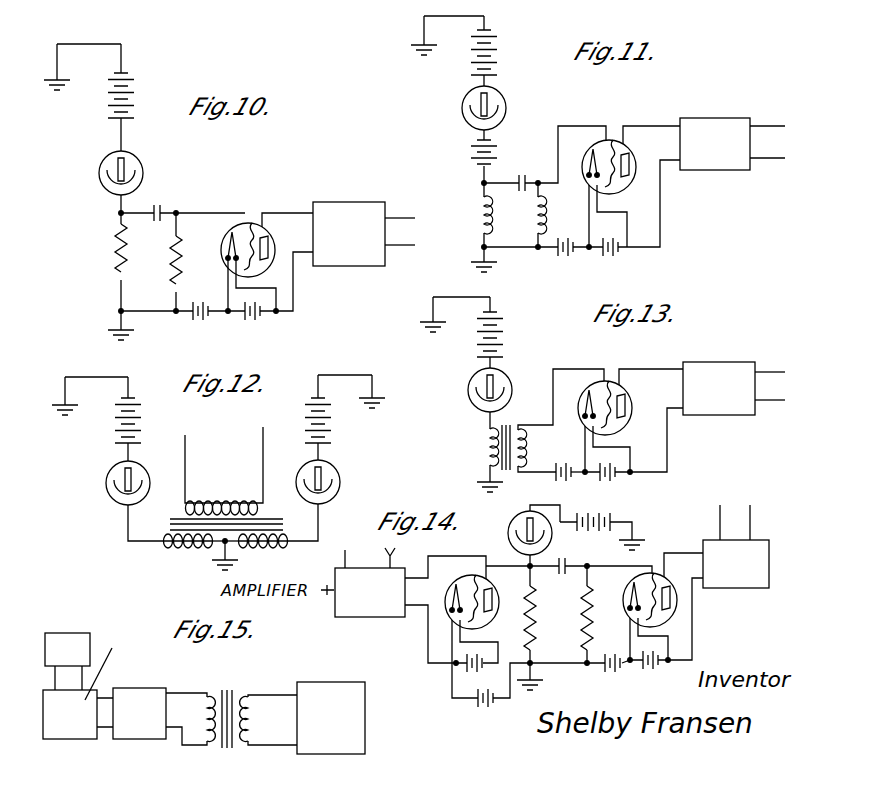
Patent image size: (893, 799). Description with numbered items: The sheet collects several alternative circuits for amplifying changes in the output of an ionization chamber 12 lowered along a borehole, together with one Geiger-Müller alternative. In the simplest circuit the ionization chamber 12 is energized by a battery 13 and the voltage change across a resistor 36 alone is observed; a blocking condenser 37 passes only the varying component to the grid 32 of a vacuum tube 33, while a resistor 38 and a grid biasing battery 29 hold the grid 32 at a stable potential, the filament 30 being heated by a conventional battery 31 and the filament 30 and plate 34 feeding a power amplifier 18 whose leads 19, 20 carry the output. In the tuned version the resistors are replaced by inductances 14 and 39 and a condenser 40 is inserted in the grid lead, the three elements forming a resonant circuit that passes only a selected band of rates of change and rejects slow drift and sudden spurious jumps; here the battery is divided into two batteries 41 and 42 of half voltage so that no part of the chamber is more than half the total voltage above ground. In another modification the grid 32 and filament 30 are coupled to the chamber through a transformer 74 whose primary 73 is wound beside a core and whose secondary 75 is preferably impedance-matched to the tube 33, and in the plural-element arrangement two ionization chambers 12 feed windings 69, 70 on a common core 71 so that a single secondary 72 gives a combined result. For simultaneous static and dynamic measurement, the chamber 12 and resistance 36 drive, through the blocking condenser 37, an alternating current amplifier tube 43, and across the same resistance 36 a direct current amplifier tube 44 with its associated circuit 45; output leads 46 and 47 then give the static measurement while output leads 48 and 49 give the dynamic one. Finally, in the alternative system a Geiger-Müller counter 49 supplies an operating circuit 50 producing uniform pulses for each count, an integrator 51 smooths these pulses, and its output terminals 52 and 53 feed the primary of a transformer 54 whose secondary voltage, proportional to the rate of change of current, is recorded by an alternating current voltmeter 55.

In FIG. 10, the ionization chamber 12 is at (98, 172).
In FIG. 11, the ionization chamber 12 is at (508, 100).
In FIG. 13, the ionization chamber 12 is at (469, 384).
In FIG. 12, the ionization chamber 12 is at (106, 483).
In FIG. 14, the ionization chamber 12 is at (509, 535).
In FIG. 10, the battery 13 is at (108, 90).
In FIG. 13, the battery 13 is at (503, 330).
In FIG. 12, the battery 13 is at (105, 420).
In FIG. 14, the battery 13 is at (613, 519).
In FIG. 11, the inductance 14 is at (478, 212).
In FIG. 10, the power amplifier 18 is at (347, 207).
In FIG. 11, the power amplifier 18 is at (710, 158).
In FIG. 13, the power amplifier 18 is at (709, 412).
In FIG. 14, the power amplifier 18 is at (765, 568).
In FIG. 10, the output lead 19 is at (398, 248).
In FIG. 11, the output lead 19 is at (768, 162).
In FIG. 13, the output lead 19 is at (772, 406).
In FIG. 10, the output lead 20 is at (403, 216).
In FIG. 11, the output lead 20 is at (767, 118).
In FIG. 13, the output lead 20 is at (772, 364).
In FIG. 10, the grid biasing battery 29 is at (212, 318).
In FIG. 11, the grid biasing battery 29 is at (566, 255).
In FIG. 13, the grid biasing battery 29 is at (548, 480).
In FIG. 10, the filament 30 is at (229, 258).
In FIG. 11, the filament 30 is at (590, 160).
In FIG. 13, the filament 30 is at (588, 400).
In FIG. 10, the battery 31 is at (249, 317).
In FIG. 11, the battery 31 is at (607, 256).
In FIG. 13, the battery 31 is at (614, 484).
In FIG. 10, the grid 32 is at (238, 236).
In FIG. 11, the grid 32 is at (614, 140).
In FIG. 13, the grid 32 is at (610, 381).
In FIG. 10, the vacuum tube 33 is at (250, 222).
In FIG. 11, the vacuum tube 33 is at (626, 183).
In FIG. 13, the vacuum tube 33 is at (630, 398).
In FIG. 10, the plate 34 is at (266, 248).
In FIG. 11, the plate 34 is at (629, 162).
In FIG. 13, the plate 34 is at (624, 412).
In FIG. 10, the resistor 36 is at (116, 251).
In FIG. 14, the resistor 36 is at (526, 600).
In FIG. 10, the blocking condenser 37 is at (161, 204).
In FIG. 14, the blocking condenser 37 is at (560, 558).
In FIG. 10, the resistor 38 is at (174, 262).
In FIG. 14, the resistor 38 is at (582, 600).
In FIG. 11, the inductance 39 is at (534, 215).
In FIG. 11, the condenser 40 is at (530, 168).
In FIG. 11, the battery 41 is at (497, 57).
In FIG. 11, the battery 42 is at (470, 152).
In FIG. 14, the alternating current amplifier tube 43 is at (630, 590).
In FIG. 14, the direct current amplifier tube 44 is at (487, 600).
In FIG. 14, the associated circuit 45 is at (364, 613).
In FIG. 14, the output lead 46 is at (345, 556).
In FIG. 14, the output lead 47 is at (405, 551).
In FIG. 14, the output lead 48 is at (718, 521).
In FIG. 14, the Geiger-Müller counter 49 is at (752, 513).
In FIG. 15, the Geiger-Müller counter 49 is at (72, 632).
In FIG. 15, the operating circuit 50 is at (73, 730).
In FIG. 15, the integrator 51 is at (138, 732).
In FIG. 15, the output terminal 52 is at (194, 689).
In FIG. 15, the output terminal 53 is at (165, 730).
In FIG. 15, the transformer 54 is at (240, 688).
In FIG. 15, the voltmeter 55 is at (312, 688).
In FIG. 12, the primary winding 69 is at (160, 550).
In FIG. 12, the primary winding 70 is at (257, 550).
In FIG. 12, the transformer core 71 is at (266, 526).
In FIG. 12, the secondary 72 is at (230, 498).
In FIG. 13, the primary winding 73 is at (483, 448).
In FIG. 13, the transformer 74 is at (507, 435).
In FIG. 13, the secondary 75 is at (530, 450).